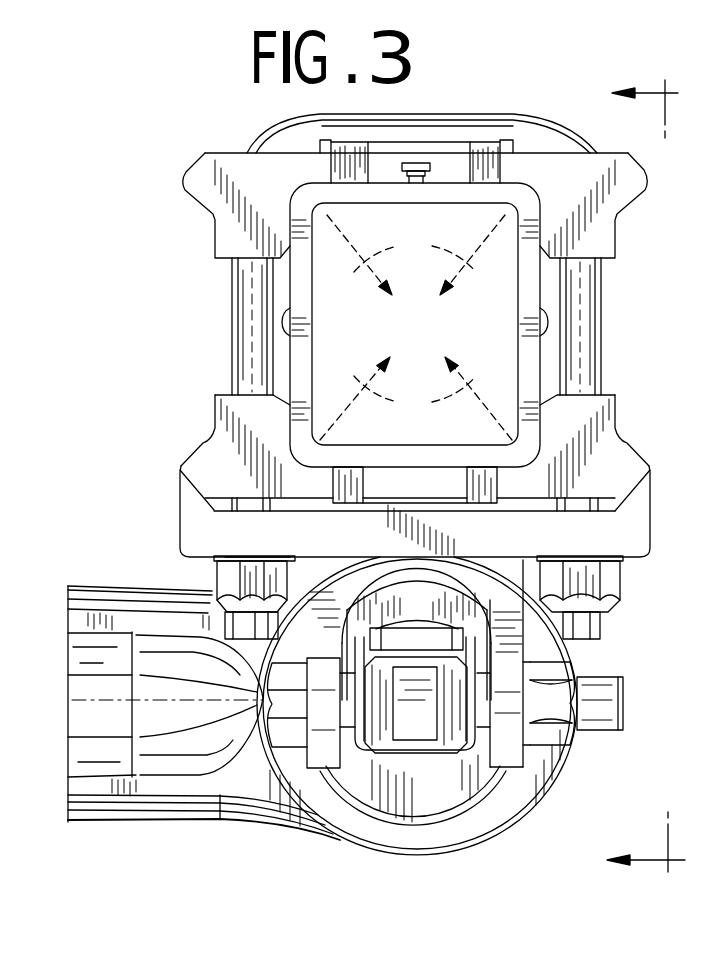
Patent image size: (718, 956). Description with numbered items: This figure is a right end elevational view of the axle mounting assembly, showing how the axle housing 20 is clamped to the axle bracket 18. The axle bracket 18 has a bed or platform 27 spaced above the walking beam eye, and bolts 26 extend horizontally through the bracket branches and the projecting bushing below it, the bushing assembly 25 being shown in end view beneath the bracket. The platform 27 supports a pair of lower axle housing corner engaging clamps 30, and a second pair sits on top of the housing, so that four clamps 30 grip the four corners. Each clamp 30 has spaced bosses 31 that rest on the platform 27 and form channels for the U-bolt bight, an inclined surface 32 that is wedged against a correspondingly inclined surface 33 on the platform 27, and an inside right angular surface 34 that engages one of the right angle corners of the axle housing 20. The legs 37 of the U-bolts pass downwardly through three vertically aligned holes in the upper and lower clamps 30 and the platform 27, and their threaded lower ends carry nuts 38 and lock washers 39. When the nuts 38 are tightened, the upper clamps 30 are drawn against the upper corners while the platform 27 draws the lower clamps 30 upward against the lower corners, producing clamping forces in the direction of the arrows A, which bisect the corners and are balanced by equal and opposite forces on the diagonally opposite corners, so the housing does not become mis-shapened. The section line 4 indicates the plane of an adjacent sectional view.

The section line 4- 4 is at (650, 479).
The axle bracket 18 is at (165, 527).
The axle housing 20 is at (508, 318).
The clamp ring 25 is at (578, 780).
The bolts 26 is at (607, 675).
The platform 27 is at (490, 544).
The axle housing corner engaging clamps 30 is at (204, 218).
The bosses 31 is at (357, 147).
The inclined surface 32 is at (200, 477).
The inclined surface 33 is at (180, 500).
The inside right angular surface 34 is at (538, 210).
The legs 37 is at (232, 336).
The nuts 38 is at (213, 580).
The lock washers 39 is at (244, 553).
The arrows A is at (416, 327).